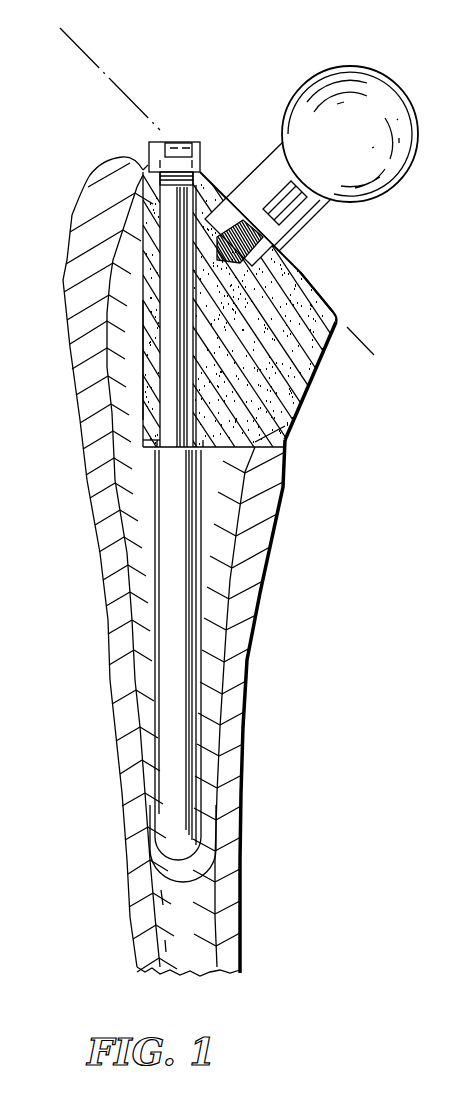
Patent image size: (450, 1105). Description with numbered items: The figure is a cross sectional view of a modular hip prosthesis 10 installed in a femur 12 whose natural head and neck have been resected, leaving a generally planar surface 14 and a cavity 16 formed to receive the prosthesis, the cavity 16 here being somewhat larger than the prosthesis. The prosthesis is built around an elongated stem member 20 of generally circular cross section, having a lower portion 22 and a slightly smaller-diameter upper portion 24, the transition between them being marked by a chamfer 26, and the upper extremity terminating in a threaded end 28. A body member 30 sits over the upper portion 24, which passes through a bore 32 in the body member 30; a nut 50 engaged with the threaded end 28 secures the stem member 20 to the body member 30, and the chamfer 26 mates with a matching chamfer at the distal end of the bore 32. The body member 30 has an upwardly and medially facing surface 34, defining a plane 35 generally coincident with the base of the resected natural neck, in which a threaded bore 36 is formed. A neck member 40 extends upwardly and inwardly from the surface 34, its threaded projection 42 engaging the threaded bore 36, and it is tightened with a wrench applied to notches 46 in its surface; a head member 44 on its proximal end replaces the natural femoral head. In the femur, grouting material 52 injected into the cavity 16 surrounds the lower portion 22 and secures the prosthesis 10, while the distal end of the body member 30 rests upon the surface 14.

The modular hip prosthesis 10 is at (375, 258).
The femur 12 is at (248, 714).
The generally planar surface 14 is at (287, 430).
The cavity 16 is at (212, 732).
The stem member 20 is at (182, 578).
The lower portion 22 is at (180, 795).
The upper portion 24 is at (173, 218).
The chamfer 26 is at (153, 446).
The threaded end 28 is at (147, 148).
The body member 30 is at (298, 367).
The bore 32 is at (158, 373).
The upwardly and inwardly facing surface 34 is at (318, 295).
The plane 35 is at (92, 54).
The threaded bore 36 is at (275, 220).
The neck member 40 is at (263, 175).
The threaded projection 42 is at (258, 240).
The head member 44 is at (325, 77).
The notches 46 is at (292, 217).
The nut 50 is at (200, 143).
The grouting material 52 is at (213, 663).